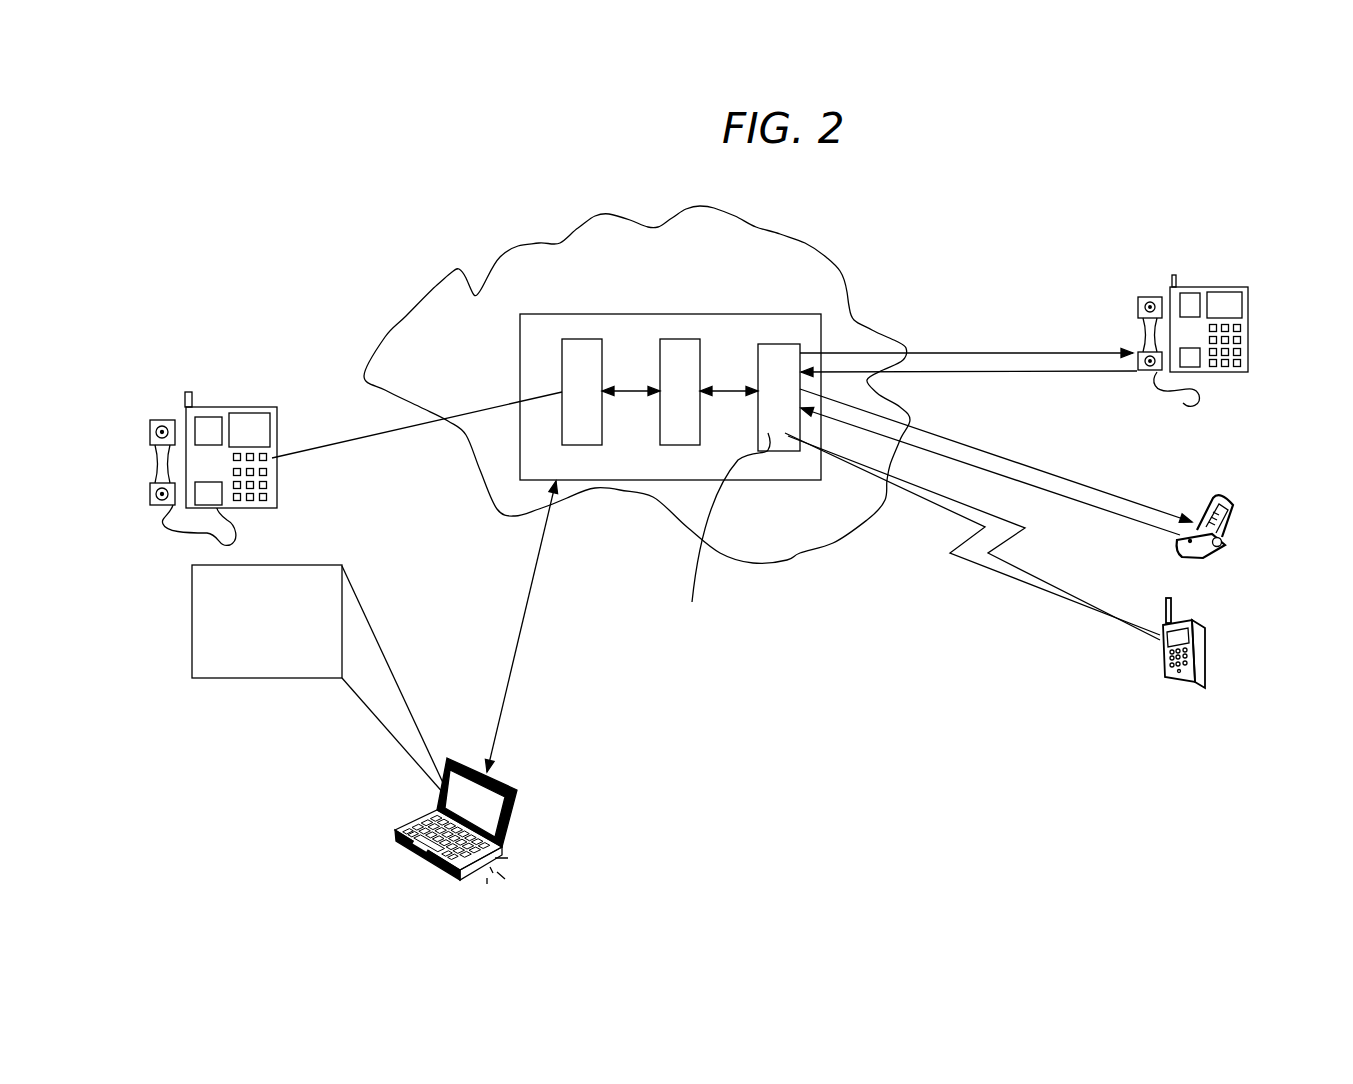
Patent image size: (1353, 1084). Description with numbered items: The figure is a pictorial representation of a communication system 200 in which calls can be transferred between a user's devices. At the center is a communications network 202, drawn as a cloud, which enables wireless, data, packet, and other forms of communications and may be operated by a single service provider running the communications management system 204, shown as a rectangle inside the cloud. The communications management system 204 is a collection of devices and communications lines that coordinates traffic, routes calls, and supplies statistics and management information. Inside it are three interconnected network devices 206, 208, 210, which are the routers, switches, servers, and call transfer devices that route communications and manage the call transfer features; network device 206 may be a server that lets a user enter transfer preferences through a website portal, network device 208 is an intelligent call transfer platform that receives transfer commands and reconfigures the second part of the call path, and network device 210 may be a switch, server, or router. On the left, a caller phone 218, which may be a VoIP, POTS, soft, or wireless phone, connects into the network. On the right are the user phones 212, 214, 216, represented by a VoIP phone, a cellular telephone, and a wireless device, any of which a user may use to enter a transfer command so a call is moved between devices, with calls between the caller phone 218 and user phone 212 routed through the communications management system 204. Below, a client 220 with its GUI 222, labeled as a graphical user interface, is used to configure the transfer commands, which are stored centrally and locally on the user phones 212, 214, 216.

The communication system 200 is at (252, 360).
The communications network 202 is at (775, 295).
The communications management system 204 is at (803, 327).
The network device 206 is at (600, 367).
The network device 208 is at (698, 374).
The network device 210 is at (797, 370).
The user phone 212 is at (1210, 365).
The user phone 214 is at (1230, 532).
The user phone 216 is at (1200, 672).
The caller phone 218 is at (272, 458).
The client 220 is at (413, 850).
The GUI 222 is at (249, 671).